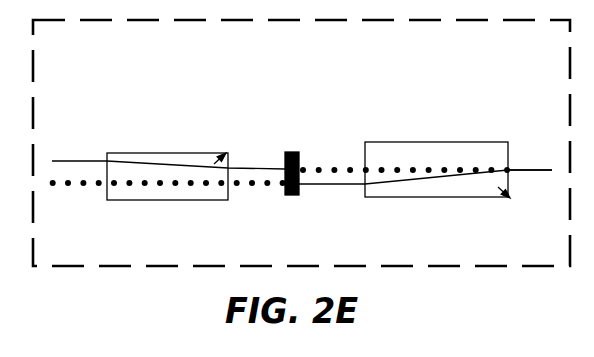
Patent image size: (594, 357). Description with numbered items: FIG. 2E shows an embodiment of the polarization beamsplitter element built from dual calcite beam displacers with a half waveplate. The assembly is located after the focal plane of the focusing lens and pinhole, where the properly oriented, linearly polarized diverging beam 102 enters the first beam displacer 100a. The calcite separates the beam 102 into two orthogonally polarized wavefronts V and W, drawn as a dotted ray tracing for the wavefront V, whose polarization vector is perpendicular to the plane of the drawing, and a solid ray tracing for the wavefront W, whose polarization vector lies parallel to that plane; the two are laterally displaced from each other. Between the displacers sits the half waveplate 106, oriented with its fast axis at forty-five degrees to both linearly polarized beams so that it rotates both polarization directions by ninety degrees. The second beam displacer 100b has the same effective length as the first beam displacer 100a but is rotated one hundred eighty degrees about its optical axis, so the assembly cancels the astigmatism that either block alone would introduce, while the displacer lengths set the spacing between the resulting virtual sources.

The orthogonally polarized wavefront W is at (67, 150).
The orthogonally polarized wavefront V is at (80, 194).
The second beam displacer 100b is at (146, 145).
The half waveplate 106 is at (293, 142).
The first beam displacer 100a is at (402, 134).
The diverging beam 102 is at (524, 158).